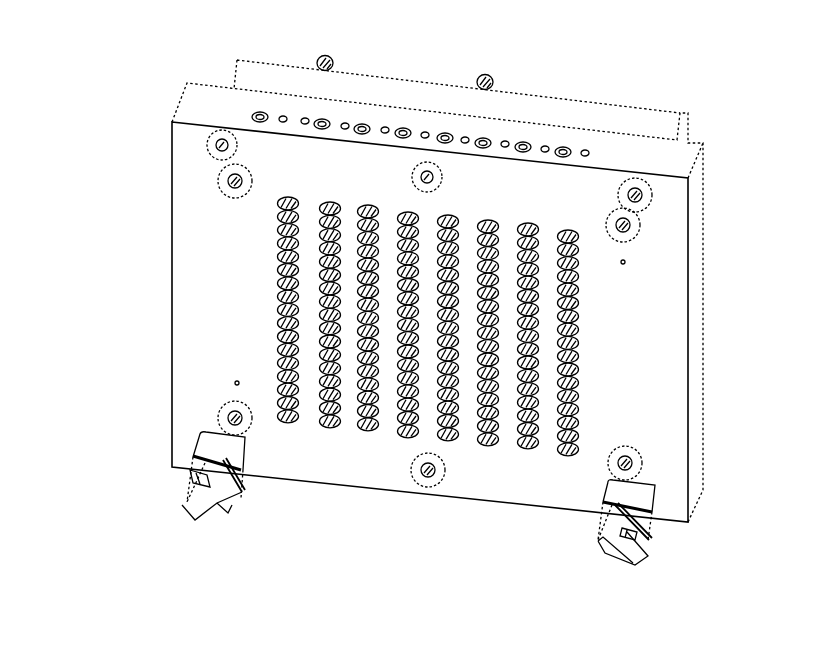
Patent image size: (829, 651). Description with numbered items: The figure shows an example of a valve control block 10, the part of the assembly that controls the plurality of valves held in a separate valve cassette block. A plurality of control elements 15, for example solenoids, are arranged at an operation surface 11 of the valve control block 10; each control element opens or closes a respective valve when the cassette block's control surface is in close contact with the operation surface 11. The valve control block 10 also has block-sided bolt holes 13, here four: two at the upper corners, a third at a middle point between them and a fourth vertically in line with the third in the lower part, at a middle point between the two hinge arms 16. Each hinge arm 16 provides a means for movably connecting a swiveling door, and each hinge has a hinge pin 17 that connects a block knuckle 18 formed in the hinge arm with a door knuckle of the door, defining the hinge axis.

The valve control block 10 is at (243, 286).
The operation surface 11 is at (527, 481).
The block-sided bolt holes 13 is at (212, 142).
The control elements 15 is at (338, 420).
The hinge arms 16 is at (217, 442).
The hinge pin 17 is at (223, 510).
The block knuckle 18 is at (183, 507).